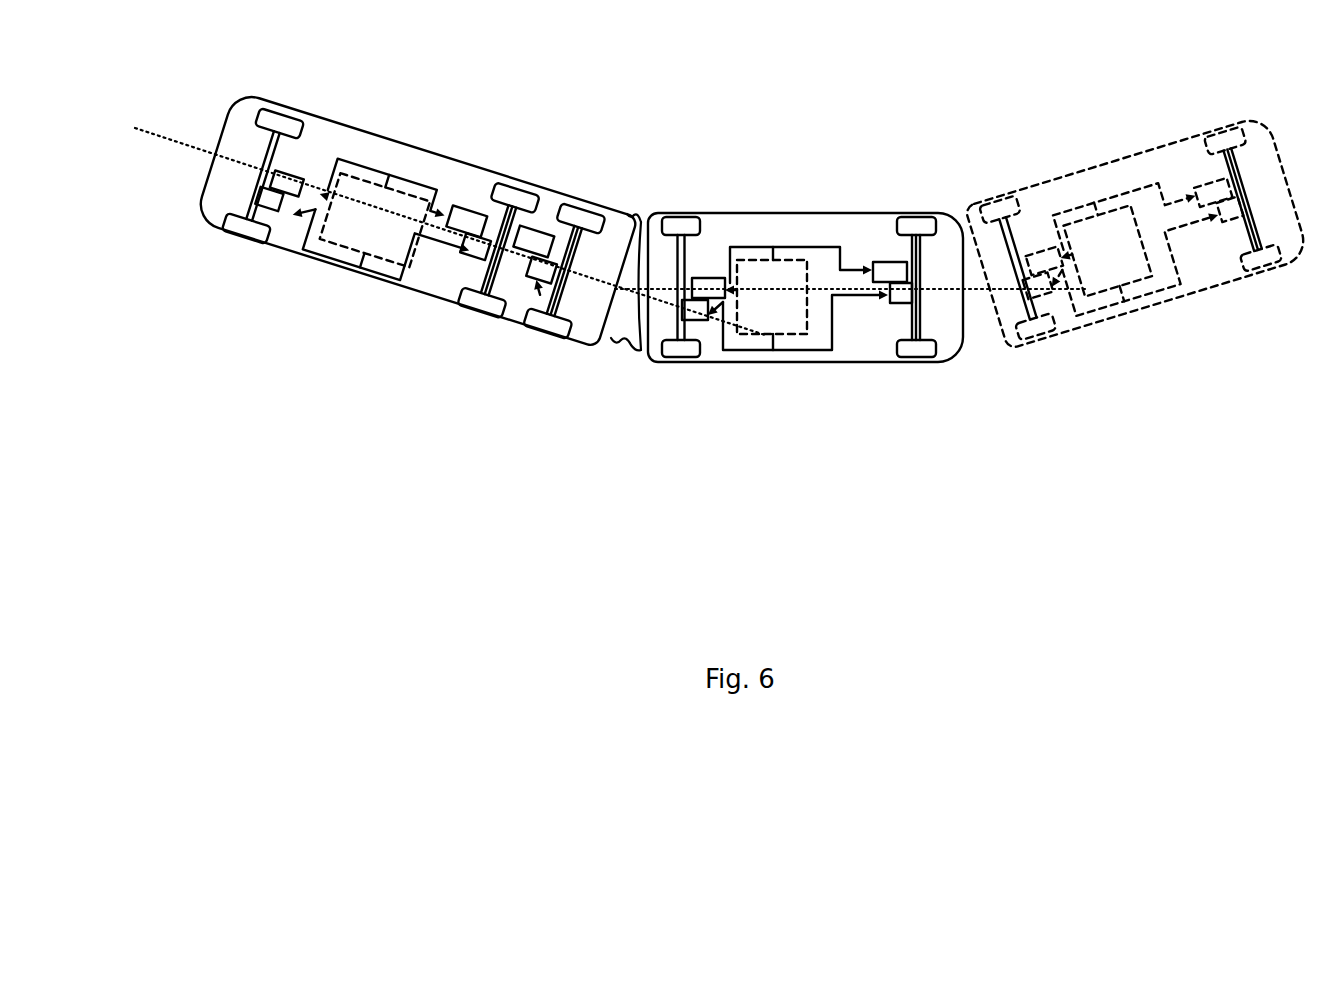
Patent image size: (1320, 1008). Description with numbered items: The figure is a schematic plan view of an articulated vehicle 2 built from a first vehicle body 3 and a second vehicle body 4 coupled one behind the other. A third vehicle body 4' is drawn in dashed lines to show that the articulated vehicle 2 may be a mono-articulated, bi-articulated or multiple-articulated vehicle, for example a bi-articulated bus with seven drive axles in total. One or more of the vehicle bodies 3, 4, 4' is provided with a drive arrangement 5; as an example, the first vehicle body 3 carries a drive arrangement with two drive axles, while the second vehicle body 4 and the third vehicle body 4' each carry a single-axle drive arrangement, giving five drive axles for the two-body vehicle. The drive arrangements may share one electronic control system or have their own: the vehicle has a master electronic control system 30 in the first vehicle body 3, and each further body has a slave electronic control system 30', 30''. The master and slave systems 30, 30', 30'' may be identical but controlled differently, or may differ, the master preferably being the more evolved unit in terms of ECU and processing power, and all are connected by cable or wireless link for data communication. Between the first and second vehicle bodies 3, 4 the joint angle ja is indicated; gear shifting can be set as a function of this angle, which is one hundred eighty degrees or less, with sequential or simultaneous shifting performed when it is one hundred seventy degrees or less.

The articulated vehicle 2 is at (521, 95).
The first vehicle body 3 is at (354, 126).
The second vehicle body 4 is at (805, 266).
The third vehicle body 4' is at (1137, 219).
The drive arrangement 5 is at (468, 183).
The master electronic control system 30 is at (384, 224).
The slave electronic control system 30' is at (798, 298).
The slave electronic control system 30'' is at (1133, 244).
The joint angle ja is at (626, 215).